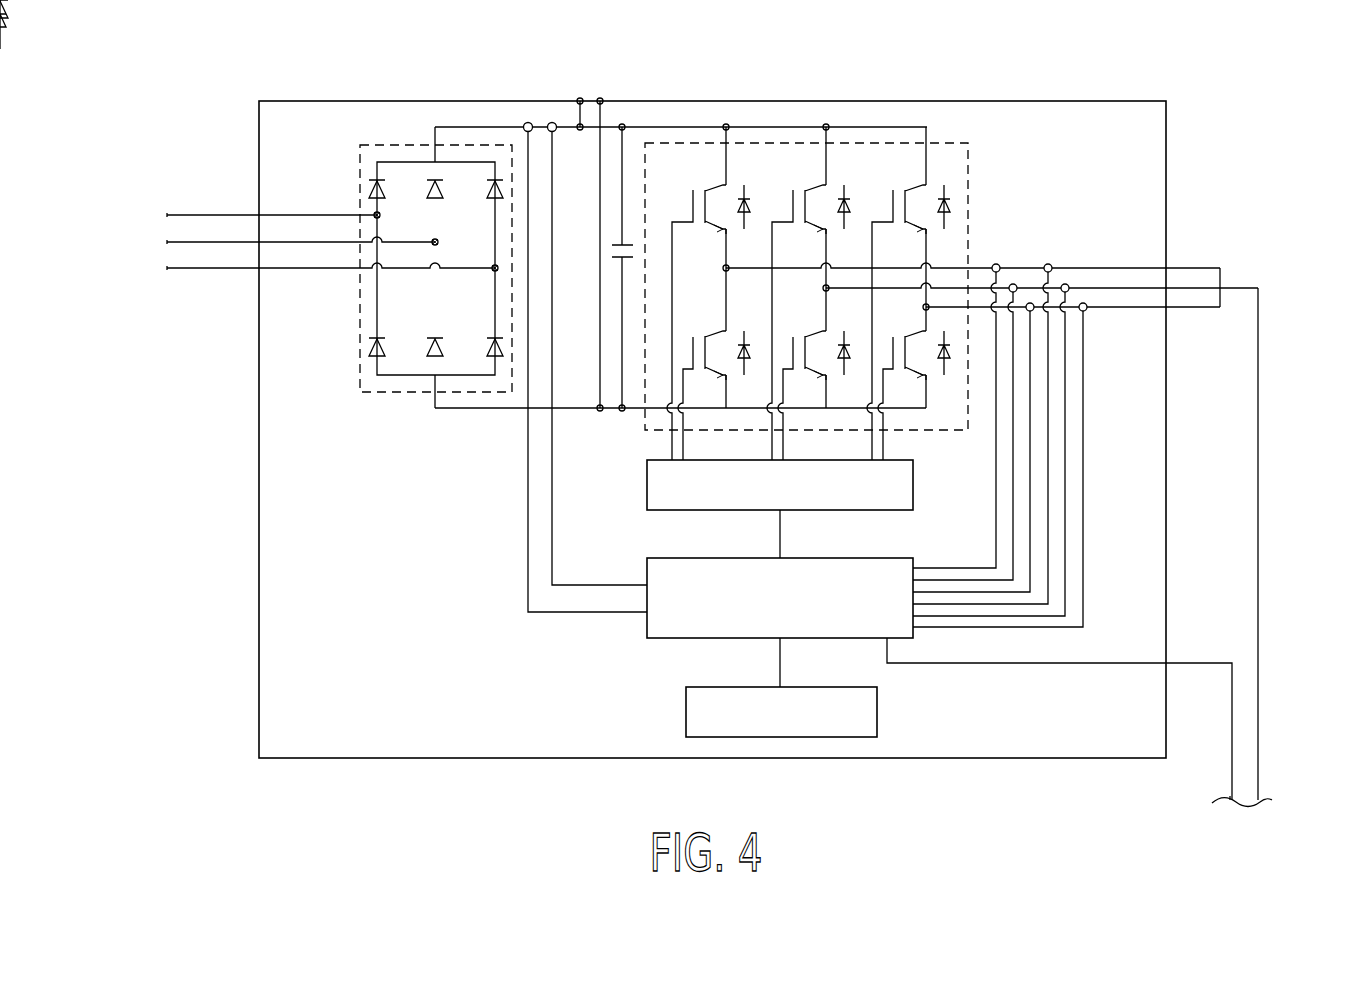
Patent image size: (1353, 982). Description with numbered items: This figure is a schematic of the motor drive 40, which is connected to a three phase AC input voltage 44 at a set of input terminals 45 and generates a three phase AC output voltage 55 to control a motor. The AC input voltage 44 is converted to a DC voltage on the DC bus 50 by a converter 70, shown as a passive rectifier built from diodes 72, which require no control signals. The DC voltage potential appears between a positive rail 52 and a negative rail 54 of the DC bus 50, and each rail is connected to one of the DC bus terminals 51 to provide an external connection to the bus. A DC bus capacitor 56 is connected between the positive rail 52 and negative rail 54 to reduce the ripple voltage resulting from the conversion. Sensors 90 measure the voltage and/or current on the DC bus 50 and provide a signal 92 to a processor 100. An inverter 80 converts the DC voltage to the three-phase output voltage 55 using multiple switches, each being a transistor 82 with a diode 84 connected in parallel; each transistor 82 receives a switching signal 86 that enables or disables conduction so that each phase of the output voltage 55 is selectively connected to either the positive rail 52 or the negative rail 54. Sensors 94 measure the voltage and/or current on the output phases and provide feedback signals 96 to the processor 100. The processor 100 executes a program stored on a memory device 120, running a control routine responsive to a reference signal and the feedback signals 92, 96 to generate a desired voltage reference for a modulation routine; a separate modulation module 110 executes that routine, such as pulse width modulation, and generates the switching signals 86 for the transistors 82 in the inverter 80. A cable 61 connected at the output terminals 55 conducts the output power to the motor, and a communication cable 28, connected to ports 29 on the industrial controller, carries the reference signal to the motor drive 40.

The communication cable 28 is at (1232, 765).
The ports 29 is at (1213, 661).
The motor drive 40 is at (259, 432).
The three phase AC input voltage 44 is at (189, 203).
The input terminals 45 is at (247, 205).
The DC bus 50 is at (636, 124).
The DC bus terminals 51 is at (587, 98).
The positive rail 52 is at (580, 132).
The negative rail 54 is at (572, 404).
The three phase AC output voltage 55 is at (1221, 263).
The DC bus capacitor 56 is at (613, 262).
The cable 61 is at (1258, 549).
The converter 70 is at (396, 394).
The diodes 72 is at (490, 178).
The inverter 80 is at (947, 138).
The transistor 82 is at (688, 208).
The diode 84 is at (749, 204).
The switching signal 86 is at (670, 441).
The sensors 90 is at (548, 122).
The signal 92 is at (554, 520).
The sensors 94 is at (1030, 301).
The feedback signal 96 is at (1006, 560).
The processor 100 is at (647, 630).
The modulation module 110 is at (647, 487).
The memory device 120 is at (686, 715).